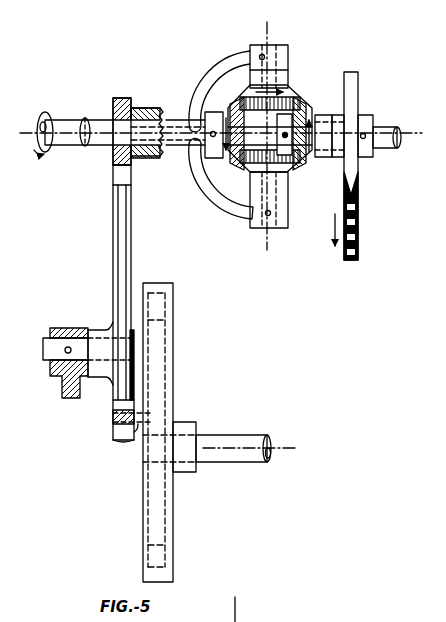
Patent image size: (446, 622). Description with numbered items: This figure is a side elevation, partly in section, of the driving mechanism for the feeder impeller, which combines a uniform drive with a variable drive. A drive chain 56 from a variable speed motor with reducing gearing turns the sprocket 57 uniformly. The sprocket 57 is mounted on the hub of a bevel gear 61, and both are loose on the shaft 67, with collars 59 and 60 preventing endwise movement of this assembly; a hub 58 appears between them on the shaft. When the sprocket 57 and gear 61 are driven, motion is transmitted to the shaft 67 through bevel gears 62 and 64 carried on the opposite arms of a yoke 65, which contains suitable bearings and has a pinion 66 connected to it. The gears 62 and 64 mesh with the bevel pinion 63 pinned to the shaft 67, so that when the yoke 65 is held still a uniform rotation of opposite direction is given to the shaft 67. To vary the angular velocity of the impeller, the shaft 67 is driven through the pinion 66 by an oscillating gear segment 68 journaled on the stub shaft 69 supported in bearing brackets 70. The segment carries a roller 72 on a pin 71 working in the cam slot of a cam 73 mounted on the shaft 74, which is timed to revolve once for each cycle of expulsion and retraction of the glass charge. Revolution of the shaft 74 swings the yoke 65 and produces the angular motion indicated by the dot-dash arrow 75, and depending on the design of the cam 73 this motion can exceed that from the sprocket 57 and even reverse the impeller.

The drive chain 56 is at (359, 222).
The sprocket 57 is at (358, 180).
The hub 58 is at (336, 158).
The collar 59 is at (378, 116).
The collar 60 is at (289, 186).
The bevel gear 61 is at (320, 115).
The bevel gear 62 is at (300, 93).
The bevel pinion 63 is at (236, 104).
The bevel gear 64 is at (242, 186).
The yoke 65 is at (250, 54).
The pinion 66 is at (122, 99).
The shaft 67 is at (79, 111).
The oscillating gear segment 68 is at (113, 247).
The stub shaft 69 is at (43, 349).
The bearing bracket 70 is at (78, 329).
The pin 71 is at (113, 421).
The roller 72 is at (134, 432).
The cam 73 is at (143, 513).
The shaft 74 is at (224, 463).
The dot-dash arrow 75 is at (86, 142).